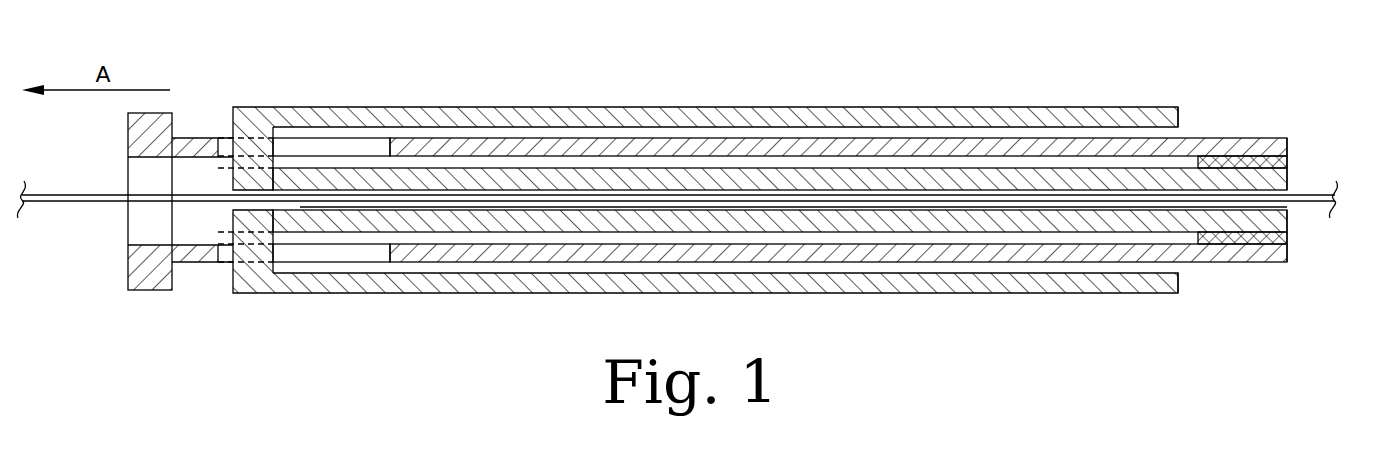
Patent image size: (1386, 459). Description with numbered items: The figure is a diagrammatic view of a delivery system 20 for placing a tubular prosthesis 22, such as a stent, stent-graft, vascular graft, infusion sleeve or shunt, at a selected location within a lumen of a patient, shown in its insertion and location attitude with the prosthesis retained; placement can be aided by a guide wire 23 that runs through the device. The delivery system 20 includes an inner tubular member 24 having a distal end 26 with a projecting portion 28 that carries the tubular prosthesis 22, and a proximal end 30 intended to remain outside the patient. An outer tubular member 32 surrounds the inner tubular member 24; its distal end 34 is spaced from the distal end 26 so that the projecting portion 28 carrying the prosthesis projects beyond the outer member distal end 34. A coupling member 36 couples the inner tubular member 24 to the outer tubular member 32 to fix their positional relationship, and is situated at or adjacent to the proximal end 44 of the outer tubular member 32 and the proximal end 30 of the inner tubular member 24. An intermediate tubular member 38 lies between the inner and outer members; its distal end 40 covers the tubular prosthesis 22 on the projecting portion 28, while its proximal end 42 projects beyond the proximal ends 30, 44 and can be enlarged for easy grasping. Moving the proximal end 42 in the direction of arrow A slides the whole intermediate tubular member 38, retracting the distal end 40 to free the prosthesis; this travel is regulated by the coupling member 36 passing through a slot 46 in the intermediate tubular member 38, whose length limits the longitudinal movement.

The delivery system 20 is at (884, 78).
The tubular prosthesis 22 is at (1288, 162).
The guide wire 23 is at (50, 203).
The inner tubular member 24 is at (892, 218).
The distal end of inner tubular member 26 is at (1290, 223).
The projecting portion 28 is at (1227, 240).
The proximal end of inner tubular member 30 is at (305, 182).
The outer tubular member 32 is at (688, 120).
The distal end of outer tubular member 34 is at (1182, 113).
The coupling member 36 is at (252, 128).
The intermediate tubular member 38 is at (500, 247).
The distal end of intermediate tubular member 40 is at (1268, 147).
The proximal end of intermediate tubular member 42 is at (148, 267).
The proximal end of outer tubular member 44 is at (303, 283).
The slot 46 is at (368, 252).